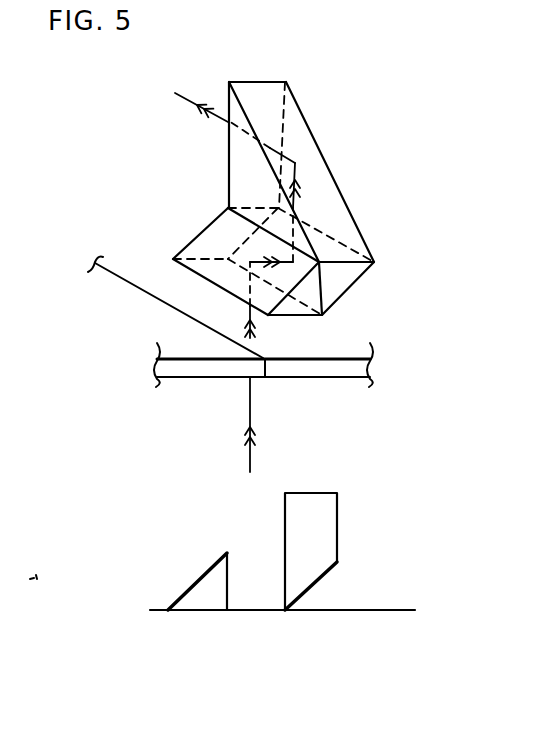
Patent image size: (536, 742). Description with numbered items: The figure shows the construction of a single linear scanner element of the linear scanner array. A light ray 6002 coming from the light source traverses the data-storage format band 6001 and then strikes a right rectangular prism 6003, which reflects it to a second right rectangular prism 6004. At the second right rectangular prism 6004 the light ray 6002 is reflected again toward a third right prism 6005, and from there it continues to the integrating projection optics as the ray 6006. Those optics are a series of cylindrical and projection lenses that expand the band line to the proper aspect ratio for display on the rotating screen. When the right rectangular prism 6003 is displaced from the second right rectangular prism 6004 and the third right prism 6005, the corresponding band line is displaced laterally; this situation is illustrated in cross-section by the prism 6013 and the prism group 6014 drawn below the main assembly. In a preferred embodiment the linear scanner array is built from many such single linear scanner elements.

The data-storage format band 6001 is at (325, 383).
The light ray 6002 is at (243, 410).
The right rectangular prism 6003 is at (198, 227).
The second right rectangular prism 6004 is at (368, 280).
The third right prism 6005 is at (320, 128).
The ray 6006 is at (182, 104).
The prism 6013 is at (195, 576).
The prism group 6014 is at (333, 577).